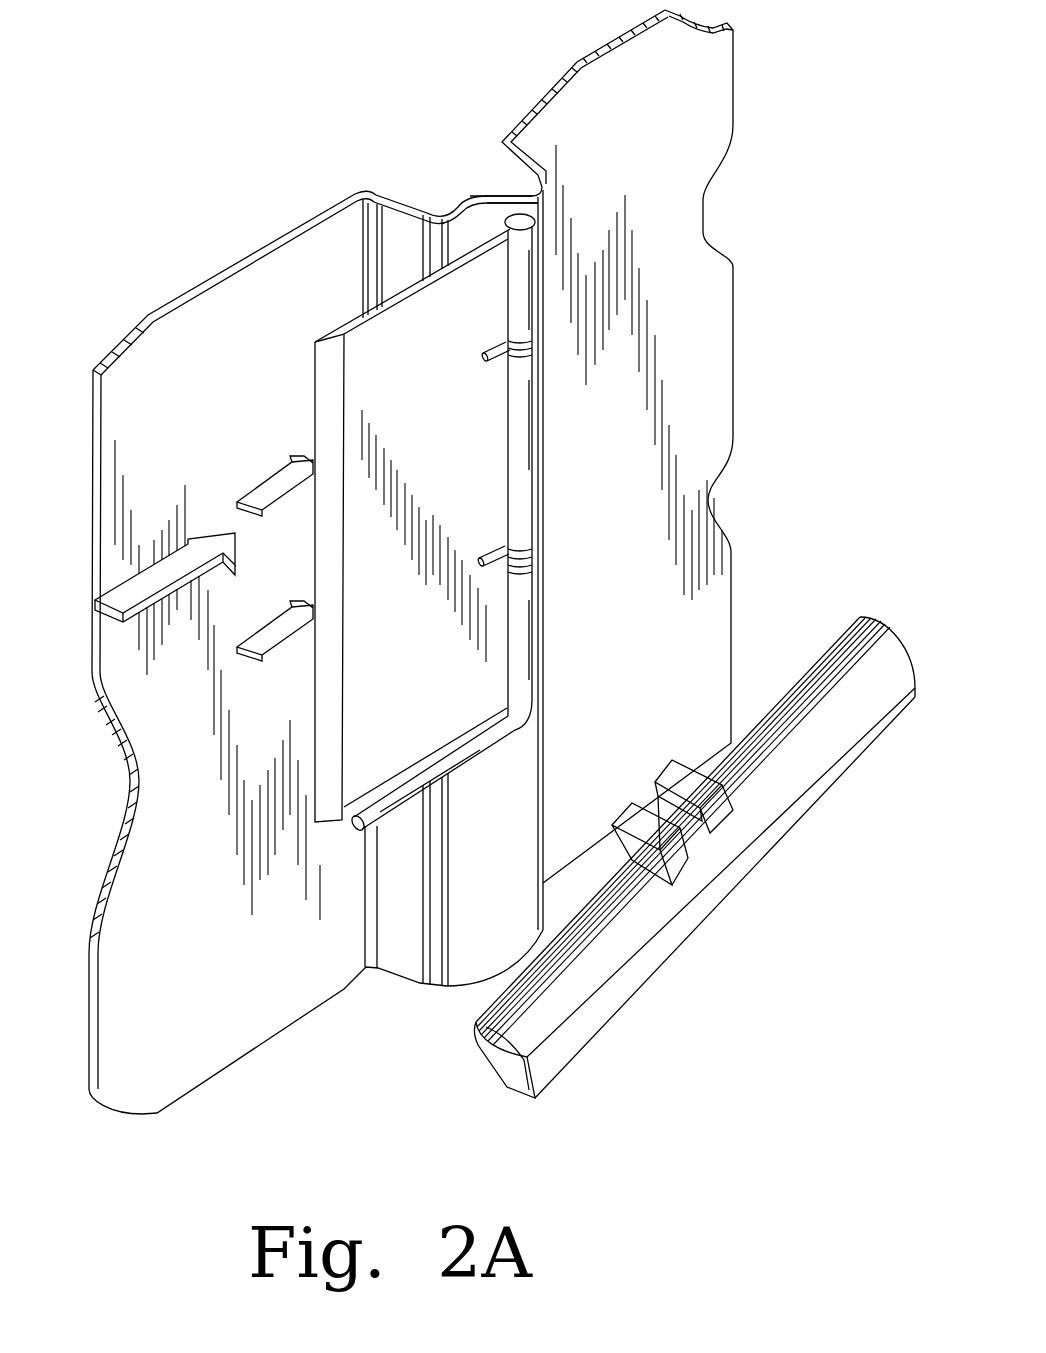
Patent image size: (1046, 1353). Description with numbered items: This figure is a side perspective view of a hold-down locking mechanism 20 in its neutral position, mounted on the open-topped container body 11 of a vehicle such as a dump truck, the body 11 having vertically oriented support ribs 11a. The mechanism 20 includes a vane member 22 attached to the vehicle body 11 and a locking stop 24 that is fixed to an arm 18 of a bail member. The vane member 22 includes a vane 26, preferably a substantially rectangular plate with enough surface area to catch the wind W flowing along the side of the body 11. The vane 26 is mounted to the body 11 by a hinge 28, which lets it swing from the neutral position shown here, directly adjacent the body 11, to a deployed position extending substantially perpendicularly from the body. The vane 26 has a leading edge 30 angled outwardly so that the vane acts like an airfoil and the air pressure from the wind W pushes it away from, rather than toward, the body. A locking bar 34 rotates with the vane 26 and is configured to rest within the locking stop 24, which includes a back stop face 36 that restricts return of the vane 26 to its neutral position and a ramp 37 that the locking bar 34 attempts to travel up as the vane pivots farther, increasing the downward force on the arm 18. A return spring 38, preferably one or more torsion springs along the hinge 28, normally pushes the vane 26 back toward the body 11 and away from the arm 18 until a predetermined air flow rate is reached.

The container body 11 is at (713, 82).
The support ribs 11a is at (400, 228).
The arm 18 is at (837, 656).
The hold-down locking mechanism 20 is at (578, 602).
The vane member 22 is at (298, 396).
The locking stop 24 is at (657, 776).
The vane 26 is at (376, 685).
The hinge 28 is at (514, 267).
The leading edge 30 is at (330, 592).
The locking bar 34 is at (485, 766).
The back stop face 36 is at (692, 832).
The ramp 37 is at (652, 797).
The return spring 38 is at (497, 363).
The wind W is at (118, 600).